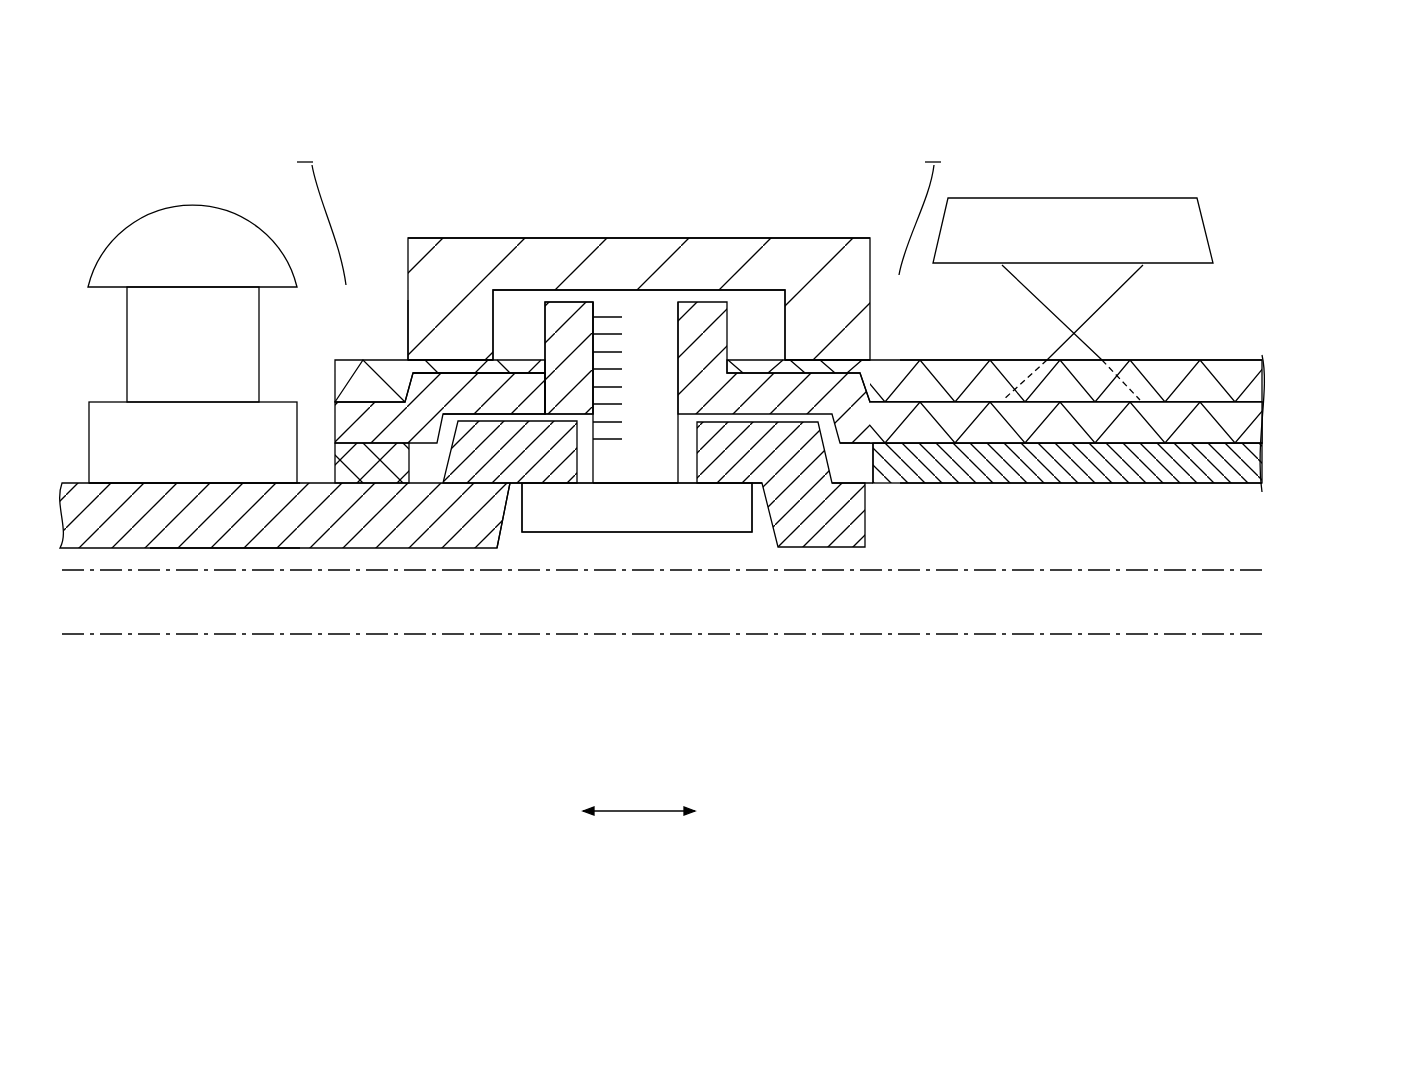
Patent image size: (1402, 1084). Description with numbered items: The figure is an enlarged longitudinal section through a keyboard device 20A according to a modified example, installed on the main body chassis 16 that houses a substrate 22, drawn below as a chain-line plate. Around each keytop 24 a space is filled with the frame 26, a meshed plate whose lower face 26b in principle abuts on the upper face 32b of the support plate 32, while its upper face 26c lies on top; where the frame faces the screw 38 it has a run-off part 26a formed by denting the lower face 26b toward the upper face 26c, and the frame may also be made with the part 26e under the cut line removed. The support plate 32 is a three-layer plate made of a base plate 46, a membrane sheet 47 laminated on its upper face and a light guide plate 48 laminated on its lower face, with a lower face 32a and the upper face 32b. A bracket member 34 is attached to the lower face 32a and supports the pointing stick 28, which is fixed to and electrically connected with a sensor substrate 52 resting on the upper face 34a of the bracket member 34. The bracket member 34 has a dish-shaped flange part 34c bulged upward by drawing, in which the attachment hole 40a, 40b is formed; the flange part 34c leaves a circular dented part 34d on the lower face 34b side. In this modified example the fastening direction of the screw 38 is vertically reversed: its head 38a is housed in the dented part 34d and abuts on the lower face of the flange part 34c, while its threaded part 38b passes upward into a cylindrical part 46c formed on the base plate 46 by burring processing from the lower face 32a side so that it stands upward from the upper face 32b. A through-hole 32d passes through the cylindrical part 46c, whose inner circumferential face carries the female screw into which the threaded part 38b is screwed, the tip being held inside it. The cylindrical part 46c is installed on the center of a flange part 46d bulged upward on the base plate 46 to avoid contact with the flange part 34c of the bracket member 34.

The keyboard device 20A is at (133, 93).
The main body chassis 16 is at (700, 537).
The substrate 22 is at (1035, 640).
The keytop 24 is at (1083, 220).
The frame 26 is at (797, 232).
The run-off part 26a is at (740, 305).
The lower face of the frame 26b is at (425, 363).
The upper face of the frame 26c is at (444, 237).
The part located under the cut line 26e is at (467, 332).
The pointing stick 28 is at (191, 220).
The support plate 32 is at (1325, 365).
The lower face of the support plate 32a is at (1123, 483).
The upper face of the support plate 32b is at (1193, 360).
The through-hole 32d is at (873, 463).
The bracket member 34 is at (268, 552).
The upper face of the bracket member 34a is at (138, 482).
The lower face of the bracket member 34b is at (205, 548).
The flange part 34c is at (730, 455).
The dented part 34d is at (505, 507).
The screw 38 is at (640, 555).
The head of the screw 38a is at (683, 508).
The threaded part of the screw 38b is at (652, 322).
The attachment hole 40a is at (577, 450).
The attachment hole 40b is at (510, 452).
The base plate 46 is at (831, 290).
The cylindrical part 46c is at (567, 322).
The flange part 46d is at (512, 392).
The membrane sheet 47 is at (1237, 383).
The light guide plate 48 is at (1237, 467).
The sensor substrate 52 is at (112, 438).